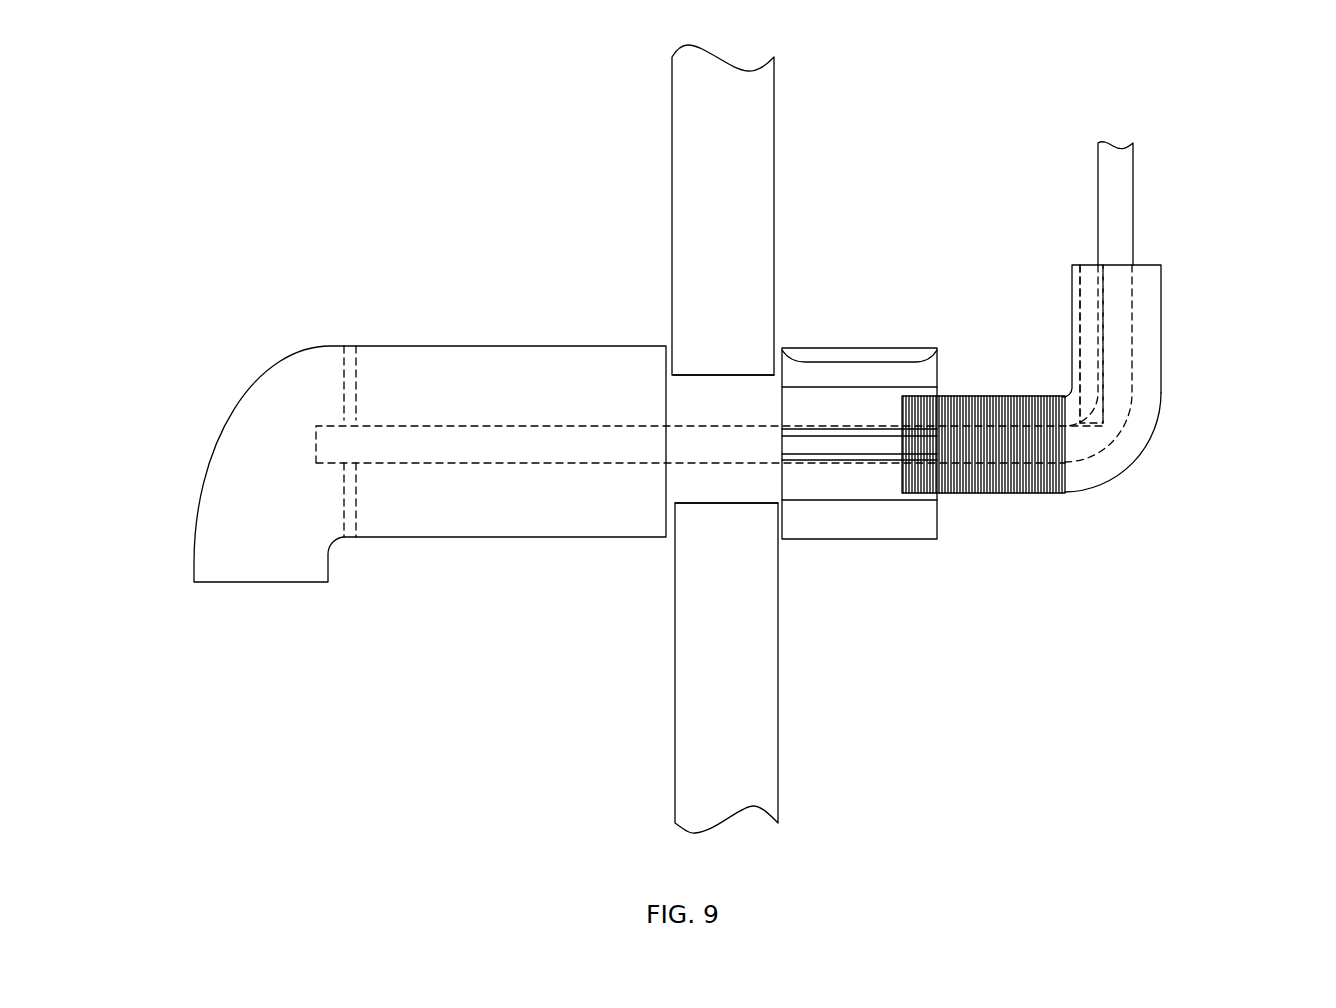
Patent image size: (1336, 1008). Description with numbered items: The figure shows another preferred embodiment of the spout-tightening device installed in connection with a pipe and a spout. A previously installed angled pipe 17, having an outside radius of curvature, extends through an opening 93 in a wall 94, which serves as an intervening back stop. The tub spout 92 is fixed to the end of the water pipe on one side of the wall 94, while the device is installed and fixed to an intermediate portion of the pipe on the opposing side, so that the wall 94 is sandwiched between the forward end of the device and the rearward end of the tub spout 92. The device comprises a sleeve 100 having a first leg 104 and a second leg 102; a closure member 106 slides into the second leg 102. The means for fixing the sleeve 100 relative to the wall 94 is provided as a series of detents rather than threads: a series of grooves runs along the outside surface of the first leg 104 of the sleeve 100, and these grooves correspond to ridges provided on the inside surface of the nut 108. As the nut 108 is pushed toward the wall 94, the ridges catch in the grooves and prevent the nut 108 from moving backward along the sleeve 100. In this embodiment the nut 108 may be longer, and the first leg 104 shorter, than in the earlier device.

The angled pipe 17 is at (1133, 213).
The tub spout 92 is at (557, 537).
The opening 93 is at (730, 493).
The wall 94 is at (774, 175).
The sleeve 100 is at (1142, 453).
The second leg 102 is at (1161, 332).
The first leg 104 is at (983, 493).
The closure member 106 is at (1080, 305).
The nut 108 is at (866, 539).